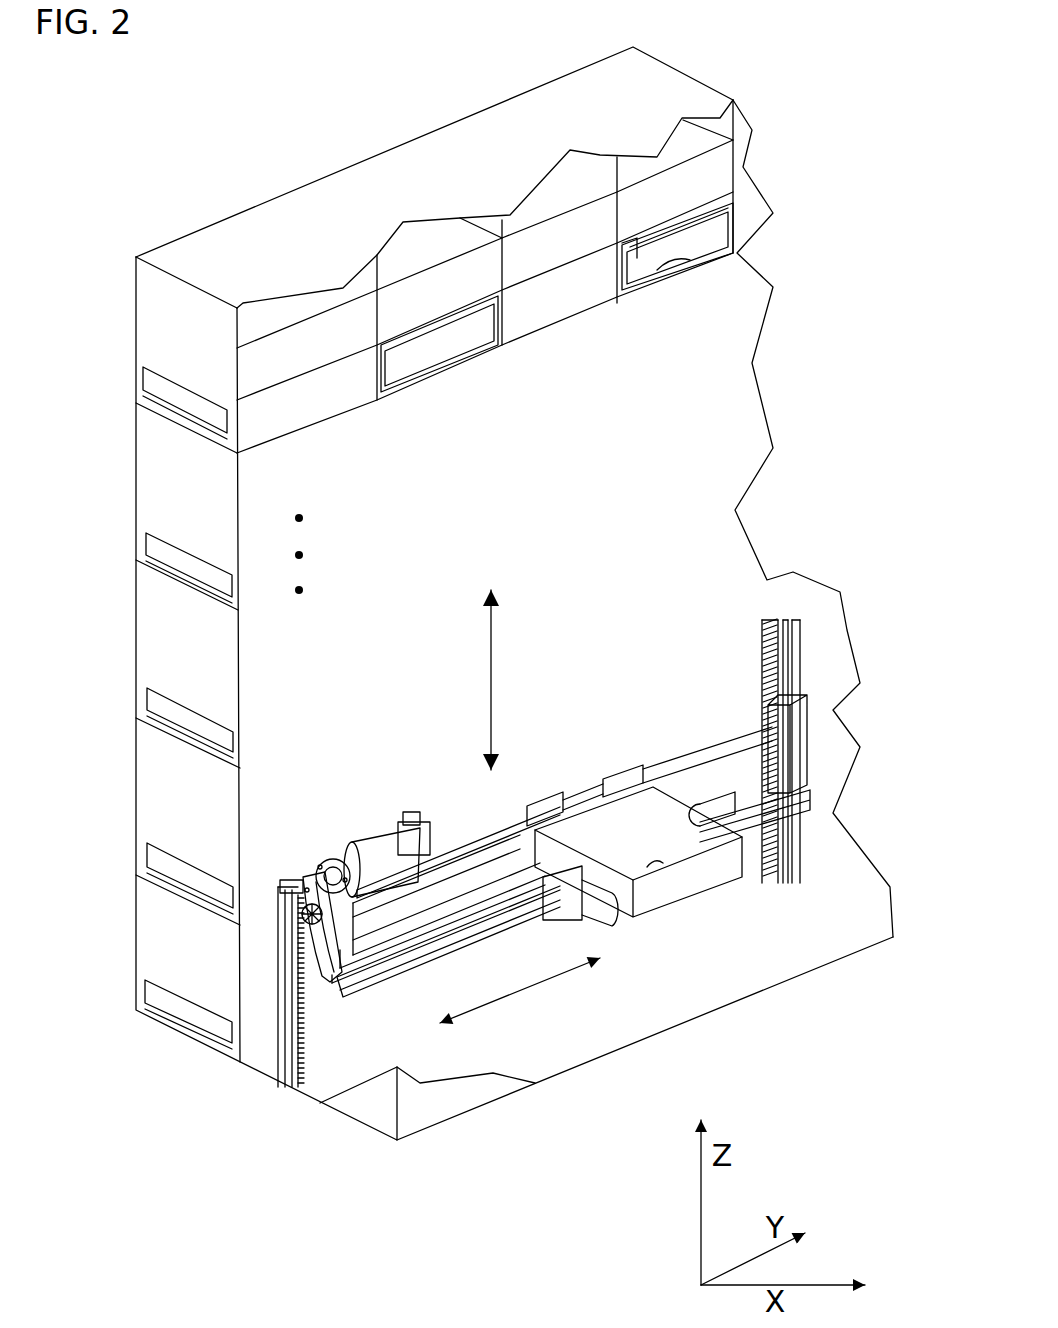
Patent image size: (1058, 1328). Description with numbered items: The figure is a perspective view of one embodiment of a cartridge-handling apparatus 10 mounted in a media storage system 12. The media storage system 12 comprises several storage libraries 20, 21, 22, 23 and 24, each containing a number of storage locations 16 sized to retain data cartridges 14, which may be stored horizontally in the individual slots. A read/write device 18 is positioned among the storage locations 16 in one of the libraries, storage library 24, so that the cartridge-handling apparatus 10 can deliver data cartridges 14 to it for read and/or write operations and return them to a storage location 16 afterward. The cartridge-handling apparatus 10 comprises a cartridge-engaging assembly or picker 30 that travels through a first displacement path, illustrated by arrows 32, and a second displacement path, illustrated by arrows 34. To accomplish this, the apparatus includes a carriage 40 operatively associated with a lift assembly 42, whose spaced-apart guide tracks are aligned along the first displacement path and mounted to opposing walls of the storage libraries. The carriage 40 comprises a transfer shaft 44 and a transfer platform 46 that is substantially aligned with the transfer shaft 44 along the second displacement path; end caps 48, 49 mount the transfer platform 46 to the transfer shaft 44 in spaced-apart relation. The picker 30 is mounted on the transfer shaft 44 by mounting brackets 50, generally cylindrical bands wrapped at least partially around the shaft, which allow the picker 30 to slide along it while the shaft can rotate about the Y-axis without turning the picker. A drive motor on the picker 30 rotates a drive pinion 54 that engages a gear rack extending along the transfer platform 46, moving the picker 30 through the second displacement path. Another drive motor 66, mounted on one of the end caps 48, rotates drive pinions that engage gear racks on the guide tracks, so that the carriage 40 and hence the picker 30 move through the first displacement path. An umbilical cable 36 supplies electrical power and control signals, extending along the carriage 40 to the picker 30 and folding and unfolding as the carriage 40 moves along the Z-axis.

The cartridge-handling apparatus 10 is at (612, 725).
The media storage system 12 is at (765, 185).
The data cartridge 14 is at (463, 360).
The storage location 16 is at (318, 352).
The read/write device 18 is at (690, 260).
The storage library 20 is at (136, 907).
The storage library 21 is at (136, 762).
The storage library 22 is at (136, 600).
The storage library 23 is at (136, 447).
The storage library 24 is at (136, 292).
The picker 30 is at (660, 867).
The arrows illustrating first displacement path 32 is at (491, 682).
The arrows illustrating second displacement path 34 is at (507, 995).
The umbilical cable 36 is at (692, 805).
The carriage 40 is at (493, 828).
The lift assembly 42 is at (273, 1018).
The transfer shaft 44 is at (745, 730).
The transfer platform 46 is at (407, 973).
The end cap 48 is at (310, 882).
The end cap 49 is at (855, 752).
The mounting bracket 50 is at (617, 790).
The drive pinion 54 is at (577, 940).
The drive motor 66 is at (332, 850).